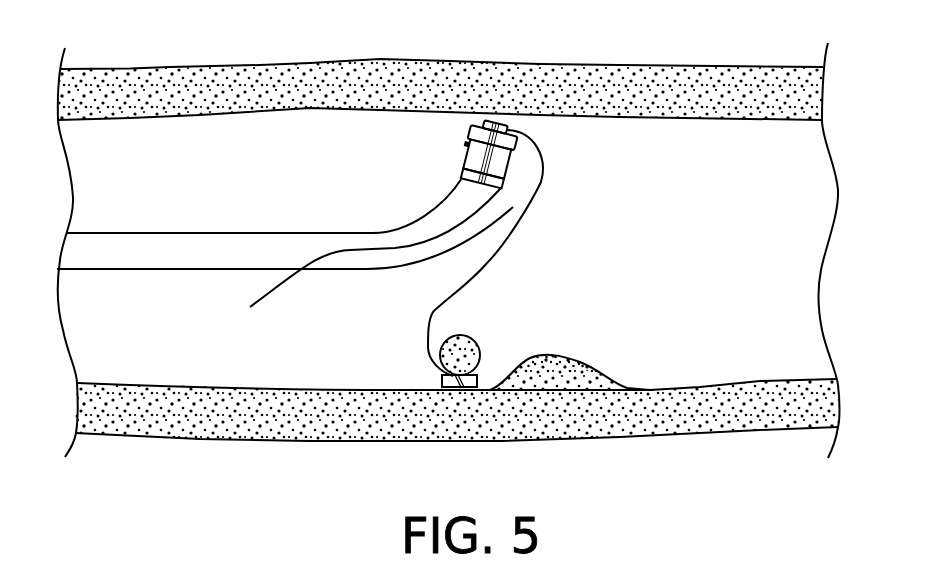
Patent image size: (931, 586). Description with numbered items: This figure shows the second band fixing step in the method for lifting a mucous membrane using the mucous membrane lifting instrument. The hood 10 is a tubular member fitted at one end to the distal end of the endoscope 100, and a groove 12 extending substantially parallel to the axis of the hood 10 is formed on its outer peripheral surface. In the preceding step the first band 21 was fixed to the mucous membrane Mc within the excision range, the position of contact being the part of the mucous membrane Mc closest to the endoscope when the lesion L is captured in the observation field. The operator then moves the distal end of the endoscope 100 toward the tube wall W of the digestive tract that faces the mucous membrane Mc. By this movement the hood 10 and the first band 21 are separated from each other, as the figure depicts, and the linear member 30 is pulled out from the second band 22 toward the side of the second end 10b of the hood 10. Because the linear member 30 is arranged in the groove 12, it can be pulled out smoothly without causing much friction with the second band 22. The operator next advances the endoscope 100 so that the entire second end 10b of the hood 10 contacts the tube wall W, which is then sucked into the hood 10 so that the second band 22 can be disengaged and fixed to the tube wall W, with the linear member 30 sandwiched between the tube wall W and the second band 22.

The hood 10 is at (452, 163).
The second end of the hood 10b is at (499, 125).
The groove 12 is at (493, 162).
The first band 21 is at (442, 380).
The second band 22 is at (450, 128).
The linear member 30 is at (527, 228).
The endoscope 100 is at (252, 231).
The tube wall W is at (599, 135).
The mucous membrane Mc is at (496, 362).
The lesion L is at (557, 362).